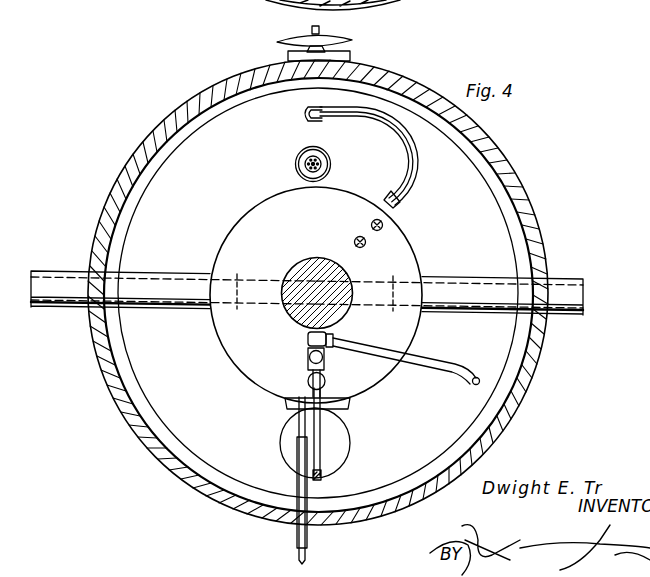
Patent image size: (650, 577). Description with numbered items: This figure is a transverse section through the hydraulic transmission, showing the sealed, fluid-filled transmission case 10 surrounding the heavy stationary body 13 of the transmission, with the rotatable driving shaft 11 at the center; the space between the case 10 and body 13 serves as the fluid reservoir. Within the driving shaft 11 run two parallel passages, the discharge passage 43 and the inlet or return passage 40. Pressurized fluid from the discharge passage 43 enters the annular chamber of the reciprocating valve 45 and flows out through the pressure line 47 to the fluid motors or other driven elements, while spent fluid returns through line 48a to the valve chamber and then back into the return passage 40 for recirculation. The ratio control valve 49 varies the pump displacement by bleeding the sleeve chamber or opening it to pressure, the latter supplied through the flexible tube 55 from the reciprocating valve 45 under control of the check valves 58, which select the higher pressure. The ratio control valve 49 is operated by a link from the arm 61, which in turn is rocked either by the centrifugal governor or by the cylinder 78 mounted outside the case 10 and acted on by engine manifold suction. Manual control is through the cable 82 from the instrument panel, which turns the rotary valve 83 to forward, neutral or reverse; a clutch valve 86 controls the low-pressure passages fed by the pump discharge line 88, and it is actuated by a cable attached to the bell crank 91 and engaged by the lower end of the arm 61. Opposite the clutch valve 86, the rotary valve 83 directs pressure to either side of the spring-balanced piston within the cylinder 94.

The transmission case 10 is at (546, 222).
The body of the transmission 13 is at (476, 192).
The cylinder 78 is at (352, 40).
The reciprocating valve 45 is at (410, 252).
The discharge passage 43 is at (333, 247).
The driving shaft 11 is at (292, 264).
The inlet passage 40 is at (300, 317).
The line 48a is at (164, 289).
The pressure line 47 is at (480, 303).
The ratio control valve 49 is at (324, 158).
The arm 61 is at (298, 165).
The flexible tube 55 is at (410, 160).
The check valves 58 is at (354, 240).
The bell crank 91 is at (330, 353).
The pump discharge line 88 is at (412, 369).
The clutch valve 86 is at (307, 356).
The rotary valve 83 is at (333, 378).
The cylinder 94 is at (350, 444).
The cable 82 is at (307, 556).